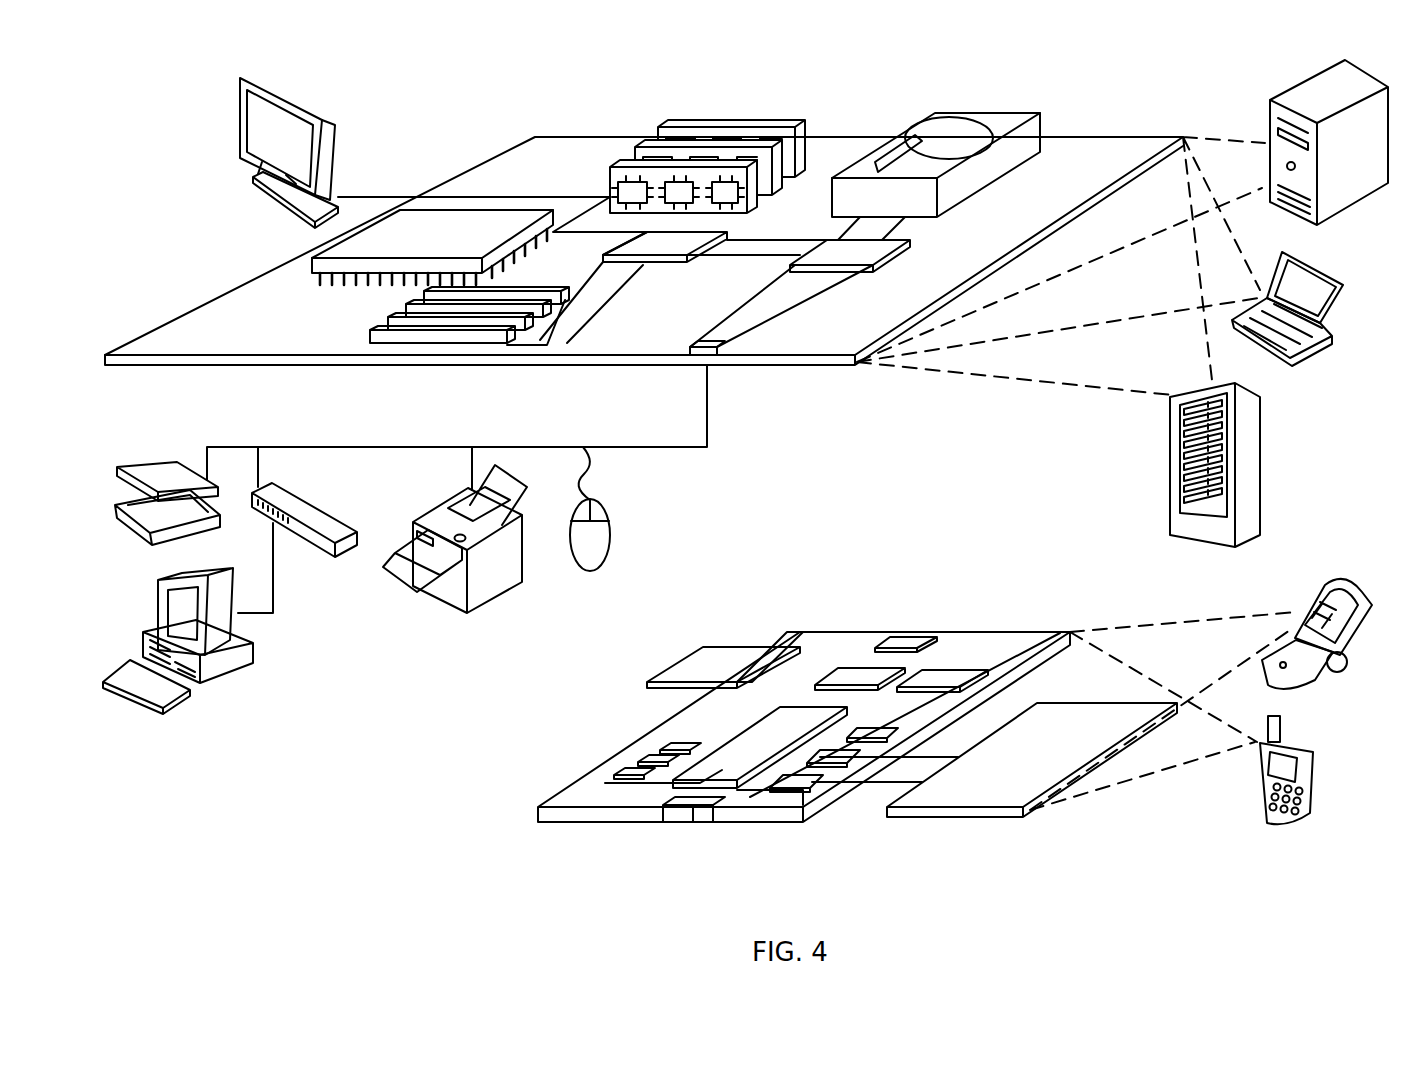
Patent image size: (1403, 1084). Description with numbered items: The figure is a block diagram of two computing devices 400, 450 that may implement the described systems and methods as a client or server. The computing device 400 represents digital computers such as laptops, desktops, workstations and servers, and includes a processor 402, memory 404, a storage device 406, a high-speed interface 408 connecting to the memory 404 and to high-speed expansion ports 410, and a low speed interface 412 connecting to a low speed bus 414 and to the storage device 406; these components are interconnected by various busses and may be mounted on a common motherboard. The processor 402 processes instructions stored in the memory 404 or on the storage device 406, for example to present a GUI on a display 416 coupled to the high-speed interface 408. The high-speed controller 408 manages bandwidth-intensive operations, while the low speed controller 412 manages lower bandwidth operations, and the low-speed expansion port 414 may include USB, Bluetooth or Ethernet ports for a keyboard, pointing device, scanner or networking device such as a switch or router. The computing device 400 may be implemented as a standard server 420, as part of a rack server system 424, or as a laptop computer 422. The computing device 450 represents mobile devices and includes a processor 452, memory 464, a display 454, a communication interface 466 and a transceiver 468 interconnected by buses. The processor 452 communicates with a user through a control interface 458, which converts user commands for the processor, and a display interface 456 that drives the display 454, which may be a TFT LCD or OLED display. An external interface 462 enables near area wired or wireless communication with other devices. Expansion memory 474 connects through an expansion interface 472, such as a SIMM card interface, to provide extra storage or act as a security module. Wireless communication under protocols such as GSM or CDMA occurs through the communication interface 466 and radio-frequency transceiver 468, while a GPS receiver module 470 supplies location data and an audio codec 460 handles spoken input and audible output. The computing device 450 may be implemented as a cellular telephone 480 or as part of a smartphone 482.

The computing device 400 is at (455, 106).
The processor 402 is at (320, 264).
The memory 404 is at (676, 126).
The storage device 406 is at (930, 128).
The high-speed interface 408 is at (645, 240).
The high-speed expansion ports 410 is at (395, 326).
The low speed interface 412 is at (830, 250).
The low speed bus 414 is at (713, 355).
The display 416 is at (240, 80).
The standard server 420 is at (1268, 120).
The laptop computer 422 is at (1344, 284).
The rack server system 424 is at (1170, 490).
The computing device 450 is at (514, 815).
The processor 452 is at (738, 775).
The display 454 is at (986, 792).
The display interface 456 is at (808, 792).
The control interface 458 is at (842, 762).
The audio codec 460 is at (868, 736).
The external interface 462 is at (693, 812).
The memory 464 is at (640, 772).
The communication interface 466 is at (850, 675).
The transceiver 468 is at (944, 676).
The GPS receiver module 470 is at (912, 640).
The expansion interface 472 is at (764, 652).
The expansion memory 474 is at (708, 660).
The cellular telephone 480 is at (1325, 594).
The smartphone 482 is at (1258, 776).